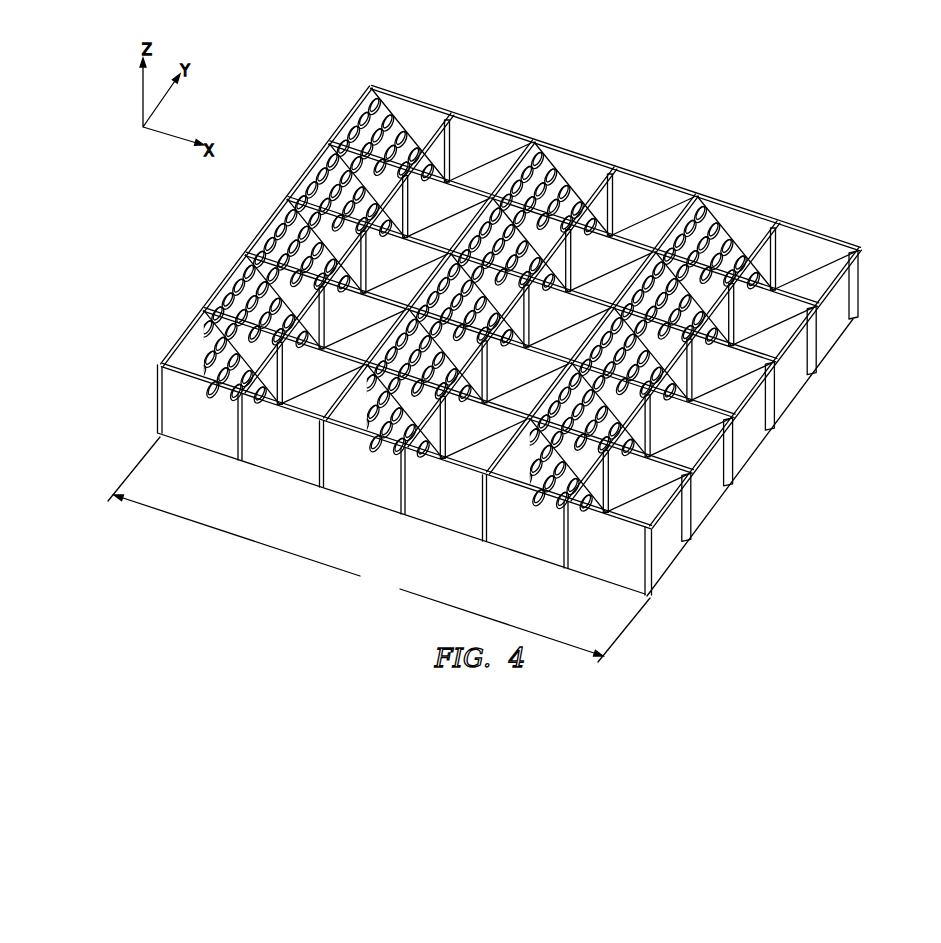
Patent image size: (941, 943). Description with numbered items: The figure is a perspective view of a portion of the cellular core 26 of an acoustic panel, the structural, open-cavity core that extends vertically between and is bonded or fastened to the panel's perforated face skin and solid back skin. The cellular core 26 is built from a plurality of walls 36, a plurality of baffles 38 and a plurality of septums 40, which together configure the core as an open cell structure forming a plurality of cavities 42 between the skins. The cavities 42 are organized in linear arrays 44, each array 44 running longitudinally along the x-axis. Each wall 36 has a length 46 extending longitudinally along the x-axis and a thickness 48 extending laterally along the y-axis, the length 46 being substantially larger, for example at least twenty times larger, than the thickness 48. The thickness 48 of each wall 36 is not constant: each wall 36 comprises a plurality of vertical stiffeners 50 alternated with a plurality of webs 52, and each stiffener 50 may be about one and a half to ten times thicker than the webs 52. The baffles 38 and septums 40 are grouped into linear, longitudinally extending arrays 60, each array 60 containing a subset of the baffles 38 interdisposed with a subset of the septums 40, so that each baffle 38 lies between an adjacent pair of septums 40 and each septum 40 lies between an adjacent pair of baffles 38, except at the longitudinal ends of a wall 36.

The cellular core 26 is at (728, 125).
The wall 36 is at (853, 312).
The baffle 38 is at (482, 173).
The septum 40 is at (527, 143).
The cavity 42 is at (417, 128).
The linear array 44 is at (320, 120).
The length 46 is at (379, 549).
The thickness 48 is at (305, 415).
The vertical stiffener 50 is at (612, 180).
The web 52 is at (577, 170).
The array 60 is at (320, 120).